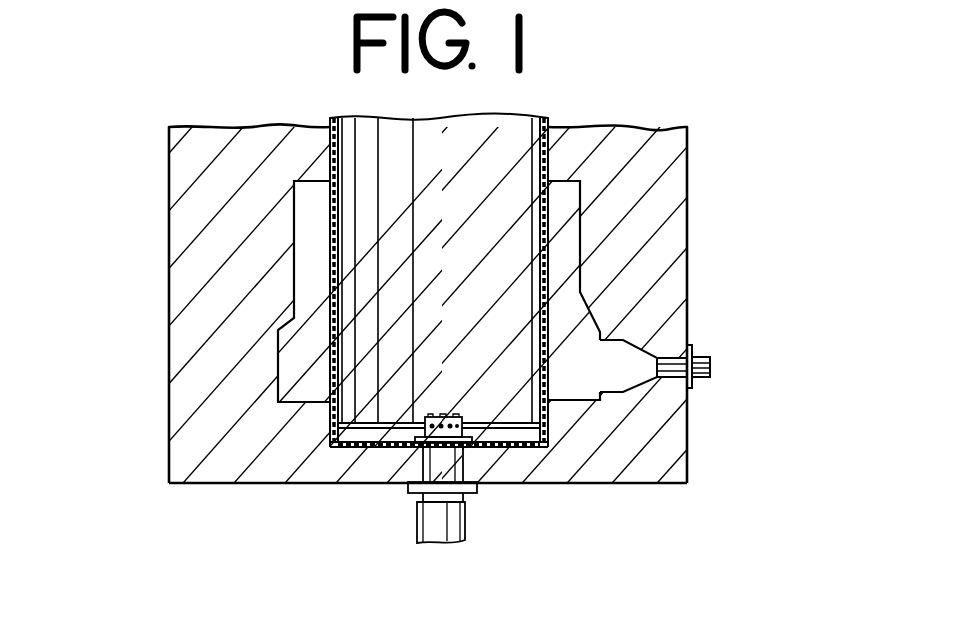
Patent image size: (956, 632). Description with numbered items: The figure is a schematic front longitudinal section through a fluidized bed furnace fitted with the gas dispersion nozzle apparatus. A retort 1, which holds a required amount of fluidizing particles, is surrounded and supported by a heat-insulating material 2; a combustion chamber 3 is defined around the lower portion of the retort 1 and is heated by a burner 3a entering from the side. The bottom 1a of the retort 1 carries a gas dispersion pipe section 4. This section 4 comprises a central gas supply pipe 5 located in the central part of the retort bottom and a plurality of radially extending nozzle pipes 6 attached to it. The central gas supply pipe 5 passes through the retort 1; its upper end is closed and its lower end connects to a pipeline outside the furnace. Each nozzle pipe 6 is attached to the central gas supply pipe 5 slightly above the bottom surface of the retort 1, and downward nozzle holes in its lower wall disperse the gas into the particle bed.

The retort 1 is at (332, 355).
The bottom wall of container 1a is at (362, 448).
The heat-insulating material 2 is at (182, 320).
The combustion chamber 3 is at (570, 234).
The burner 3a is at (710, 366).
The gas dispersion pipe section 4 is at (472, 414).
The central gas supply pipe 5 is at (440, 416).
The nozzle pipe 6 is at (389, 423).